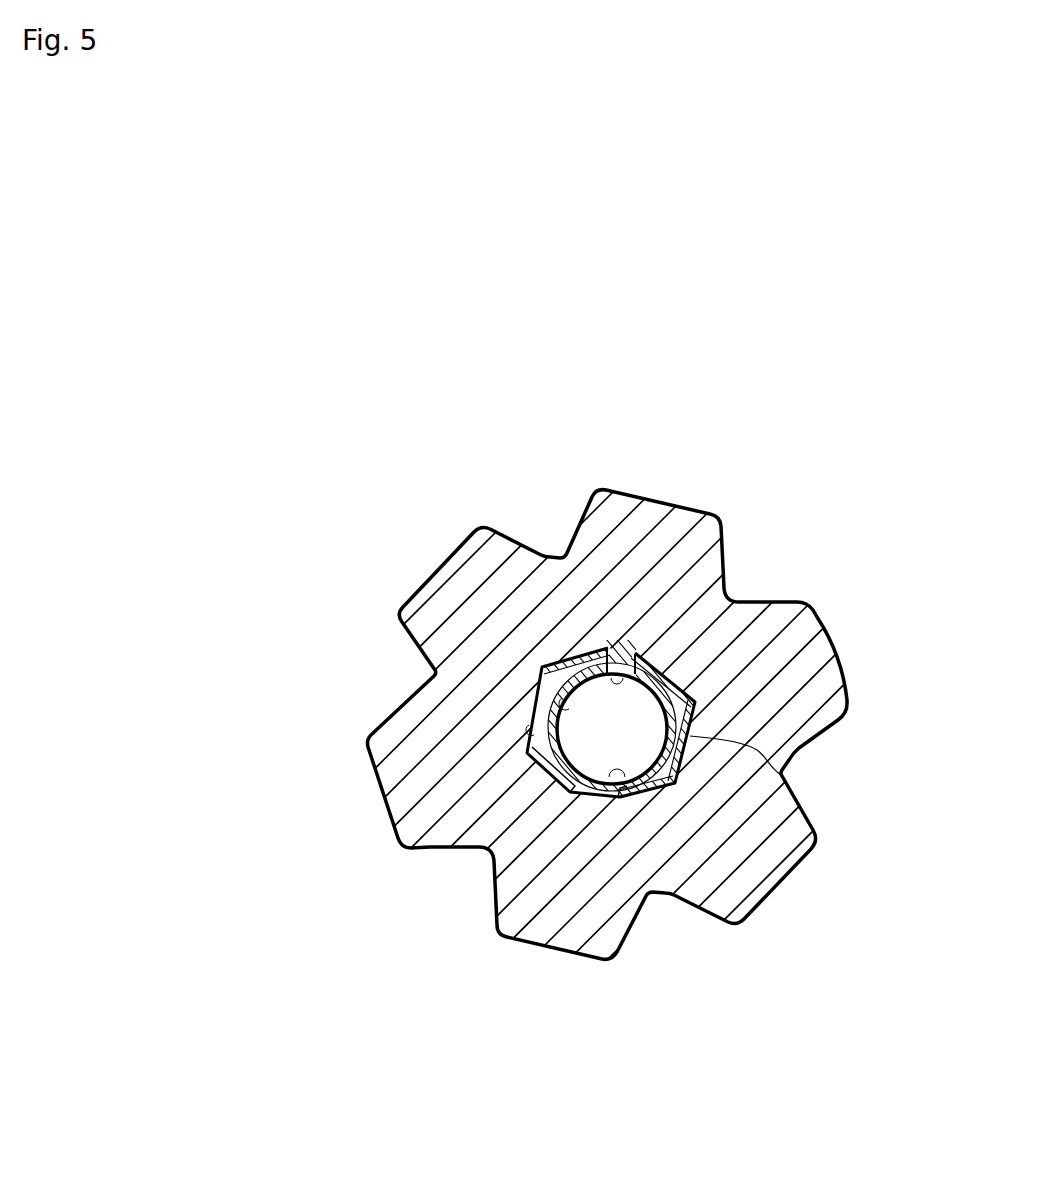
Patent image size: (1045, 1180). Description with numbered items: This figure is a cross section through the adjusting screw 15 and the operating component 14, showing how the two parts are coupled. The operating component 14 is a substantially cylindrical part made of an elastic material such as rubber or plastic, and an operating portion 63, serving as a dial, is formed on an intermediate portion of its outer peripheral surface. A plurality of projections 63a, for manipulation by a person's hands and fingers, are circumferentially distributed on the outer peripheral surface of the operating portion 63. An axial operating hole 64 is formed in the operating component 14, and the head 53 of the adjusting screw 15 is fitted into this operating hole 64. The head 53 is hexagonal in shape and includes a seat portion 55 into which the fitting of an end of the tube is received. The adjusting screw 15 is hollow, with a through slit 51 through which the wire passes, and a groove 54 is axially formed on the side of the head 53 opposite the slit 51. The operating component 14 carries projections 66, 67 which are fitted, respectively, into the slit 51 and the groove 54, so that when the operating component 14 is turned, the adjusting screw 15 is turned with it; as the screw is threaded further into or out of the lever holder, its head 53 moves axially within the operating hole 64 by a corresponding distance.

The operating component 14 is at (837, 631).
The adjusting screw 15 is at (781, 775).
The slit 51 is at (631, 665).
The head 53 is at (662, 664).
The groove 54 is at (598, 794).
The seat portion 55 is at (560, 703).
The operating portion 63 is at (665, 500).
The projections 63a is at (437, 559).
The operating hole 64 is at (543, 738).
The projection 66 is at (609, 647).
The projection 67 is at (620, 797).